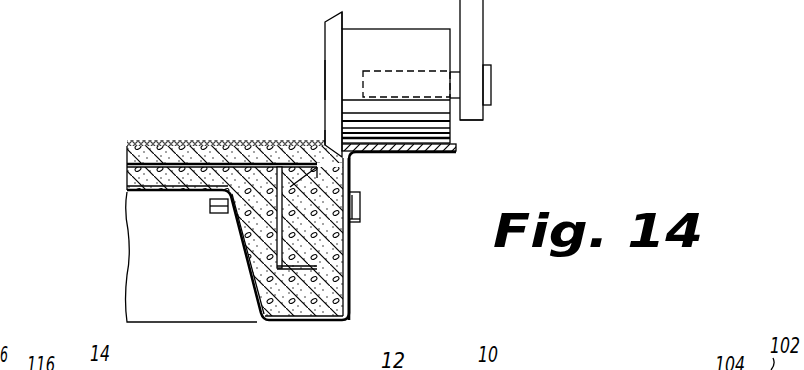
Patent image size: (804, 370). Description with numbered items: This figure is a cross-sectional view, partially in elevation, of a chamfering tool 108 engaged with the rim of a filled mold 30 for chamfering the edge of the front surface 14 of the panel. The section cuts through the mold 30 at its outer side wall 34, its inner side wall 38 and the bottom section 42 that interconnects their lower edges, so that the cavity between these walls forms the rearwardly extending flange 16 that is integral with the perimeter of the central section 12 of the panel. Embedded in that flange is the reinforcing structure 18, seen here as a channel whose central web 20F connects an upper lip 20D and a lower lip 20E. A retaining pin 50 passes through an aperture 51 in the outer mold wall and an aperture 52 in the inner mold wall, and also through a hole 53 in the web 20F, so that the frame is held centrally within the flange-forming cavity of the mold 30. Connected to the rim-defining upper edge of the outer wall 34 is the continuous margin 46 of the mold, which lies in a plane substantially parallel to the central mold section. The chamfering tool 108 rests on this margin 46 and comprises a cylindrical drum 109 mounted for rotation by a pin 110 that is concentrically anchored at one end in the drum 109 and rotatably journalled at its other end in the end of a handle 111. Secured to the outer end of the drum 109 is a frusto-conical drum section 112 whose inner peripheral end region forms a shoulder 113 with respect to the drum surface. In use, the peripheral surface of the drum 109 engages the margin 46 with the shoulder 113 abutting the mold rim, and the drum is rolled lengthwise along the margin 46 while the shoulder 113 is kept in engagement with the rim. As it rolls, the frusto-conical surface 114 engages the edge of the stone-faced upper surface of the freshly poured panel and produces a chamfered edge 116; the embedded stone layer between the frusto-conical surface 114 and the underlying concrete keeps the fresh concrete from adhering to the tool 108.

The front surface 14 is at (127, 142).
The central section 12 is at (127, 172).
The upper lip 20D is at (290, 143).
The lower lip 20E is at (335, 273).
The central web 20F is at (276, 248).
The outer side wall 34 is at (349, 302).
The aperture 51 is at (345, 237).
The hole 53 is at (345, 172).
The retaining pin 50 is at (362, 202).
The aperture 52 is at (230, 218).
The reinforcing structure 18 is at (252, 258).
The mold 30 is at (191, 308).
The inner side wall 38 is at (250, 294).
The bottom section 42 is at (285, 323).
The flange 16 is at (296, 304).
The margin 46 is at (459, 149).
The frusto-conical drum section 112 is at (324, 40).
The frusto-conical surface 114 is at (334, 80).
The chamfered edge 116 is at (342, 150).
The shoulder 113 is at (343, 15).
The cylindrical drum 109 is at (408, 28).
The pin 110 is at (366, 70).
The handle 111 is at (484, 10).
The chamfering tool 108 is at (504, 50).